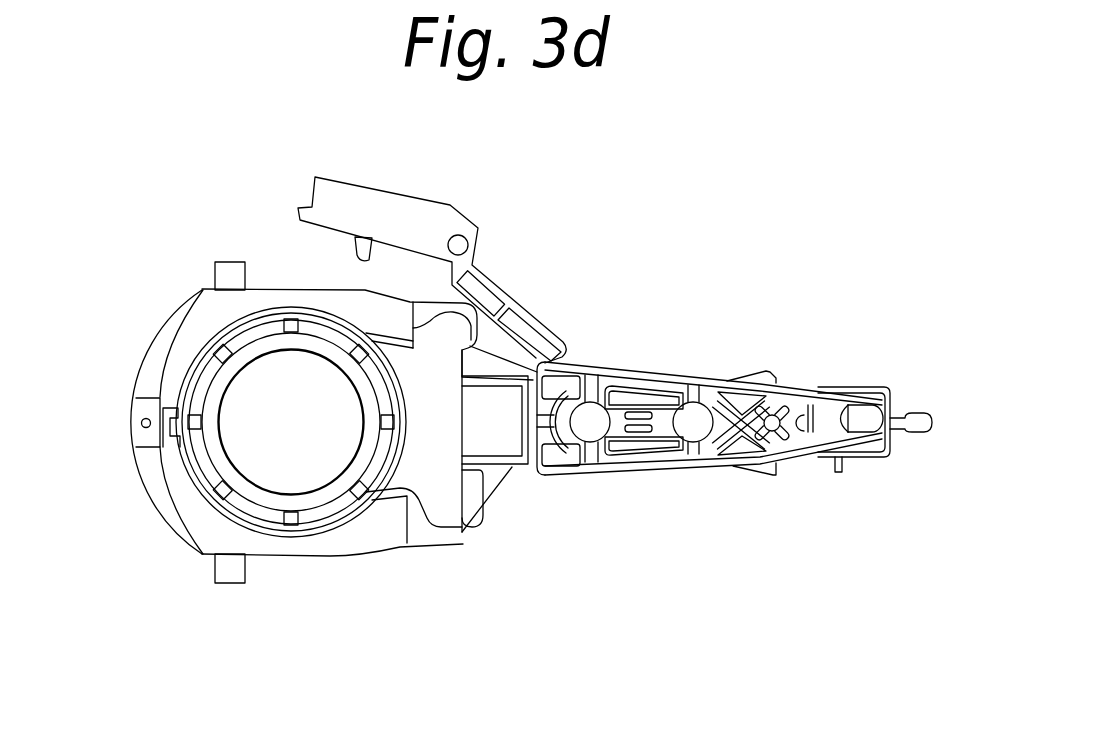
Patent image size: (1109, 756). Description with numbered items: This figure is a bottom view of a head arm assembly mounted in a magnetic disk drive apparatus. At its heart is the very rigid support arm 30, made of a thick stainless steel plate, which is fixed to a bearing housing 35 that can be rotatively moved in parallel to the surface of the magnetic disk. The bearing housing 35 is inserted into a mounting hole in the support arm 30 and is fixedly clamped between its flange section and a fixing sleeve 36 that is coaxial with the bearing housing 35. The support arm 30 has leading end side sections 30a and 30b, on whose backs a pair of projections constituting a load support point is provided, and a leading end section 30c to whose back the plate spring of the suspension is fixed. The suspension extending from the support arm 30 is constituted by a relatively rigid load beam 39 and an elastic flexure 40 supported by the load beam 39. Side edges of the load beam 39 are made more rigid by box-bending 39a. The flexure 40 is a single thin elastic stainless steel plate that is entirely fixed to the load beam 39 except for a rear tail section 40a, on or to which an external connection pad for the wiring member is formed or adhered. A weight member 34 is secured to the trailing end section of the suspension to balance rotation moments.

The support arm 30 is at (172, 428).
The leading end side section 30a is at (450, 328).
The leading end side section 30b is at (458, 518).
The leading end section 30c is at (500, 437).
The weight member 34 is at (171, 351).
The bearing housing 35 is at (292, 503).
The fixing sleeve 36 is at (248, 327).
The load beam 39 is at (693, 446).
The box-bending 39a is at (662, 373).
The flexure 40 is at (767, 372).
The rear tail section 40a is at (413, 210).